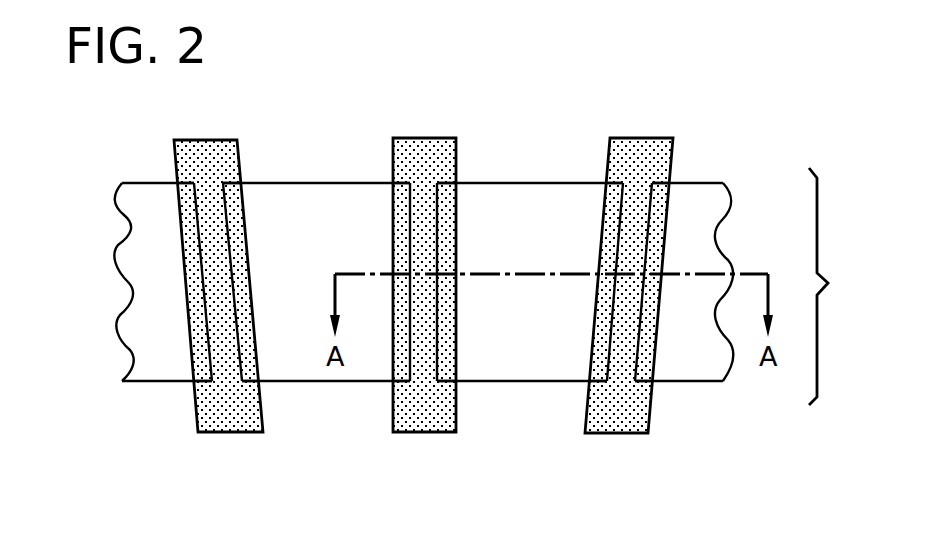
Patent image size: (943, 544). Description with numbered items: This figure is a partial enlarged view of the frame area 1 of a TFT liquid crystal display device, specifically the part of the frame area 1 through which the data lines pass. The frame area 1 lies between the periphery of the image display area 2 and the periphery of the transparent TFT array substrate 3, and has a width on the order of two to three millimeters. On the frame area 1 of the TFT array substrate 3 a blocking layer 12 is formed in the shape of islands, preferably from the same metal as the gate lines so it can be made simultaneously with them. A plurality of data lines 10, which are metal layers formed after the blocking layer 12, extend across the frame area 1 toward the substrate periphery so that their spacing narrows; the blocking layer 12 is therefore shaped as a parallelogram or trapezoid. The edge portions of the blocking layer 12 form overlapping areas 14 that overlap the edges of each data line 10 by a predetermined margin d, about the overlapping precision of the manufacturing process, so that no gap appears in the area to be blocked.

The frame area 1 is at (829, 286).
The image display area 2 is at (430, 98).
The TFT array substrate 3 is at (418, 520).
The data line 10 is at (228, 405).
The blocking layer 12 is at (159, 360).
The overlapping area 14 is at (192, 258).